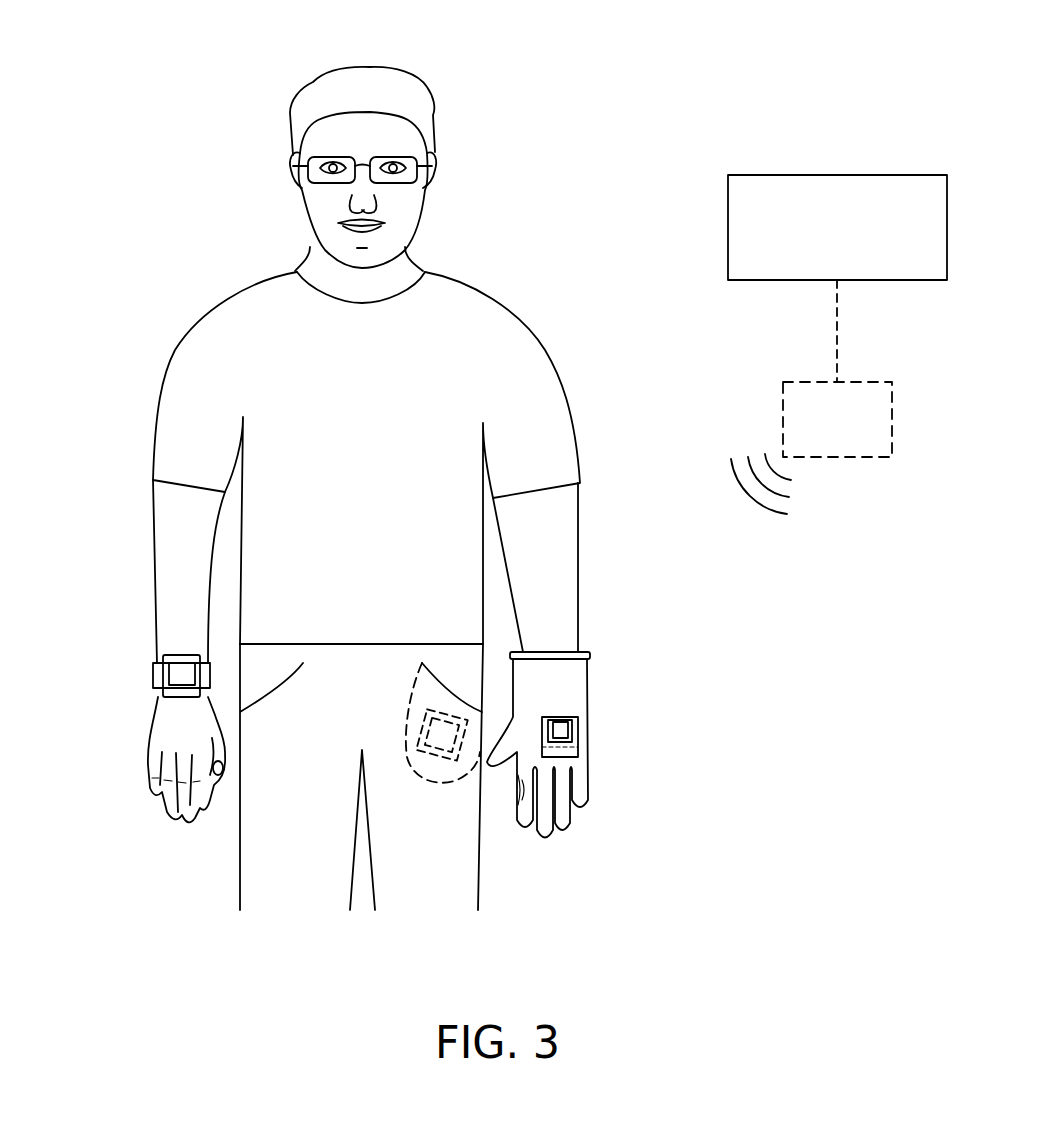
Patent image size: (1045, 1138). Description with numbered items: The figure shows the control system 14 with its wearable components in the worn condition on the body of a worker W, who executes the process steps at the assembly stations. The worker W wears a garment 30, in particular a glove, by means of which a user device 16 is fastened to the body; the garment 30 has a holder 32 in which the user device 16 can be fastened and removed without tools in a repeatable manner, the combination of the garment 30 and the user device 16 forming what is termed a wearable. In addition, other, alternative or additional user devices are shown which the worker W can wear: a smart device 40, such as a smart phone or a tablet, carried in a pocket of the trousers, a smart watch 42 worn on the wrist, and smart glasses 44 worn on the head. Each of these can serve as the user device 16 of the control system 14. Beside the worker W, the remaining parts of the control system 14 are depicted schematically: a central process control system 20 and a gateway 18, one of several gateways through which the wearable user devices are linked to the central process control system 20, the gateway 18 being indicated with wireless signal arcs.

The control system 14 is at (176, 91).
The worker W is at (221, 297).
The user device 16 is at (580, 750).
The smart glasses 44 is at (397, 157).
The smart watch 42 is at (180, 675).
The smart device 40 is at (443, 732).
The garment 30 is at (572, 705).
The holder 32 is at (543, 737).
The central process control system 20 is at (835, 175).
The gateway 18 is at (853, 458).